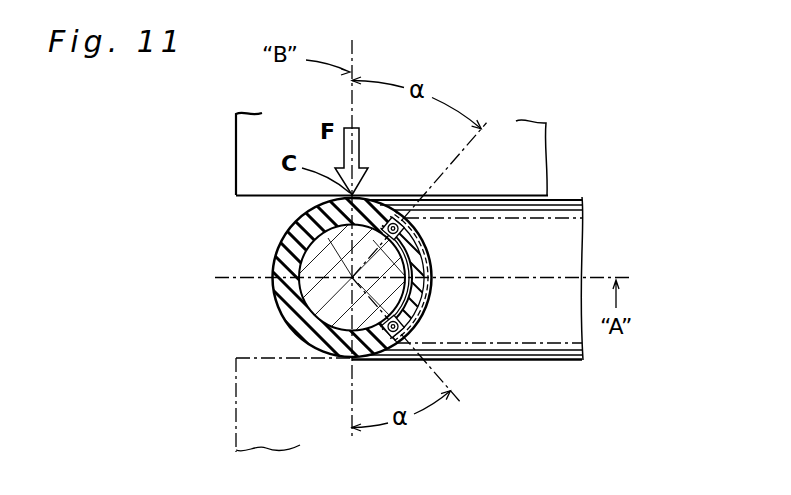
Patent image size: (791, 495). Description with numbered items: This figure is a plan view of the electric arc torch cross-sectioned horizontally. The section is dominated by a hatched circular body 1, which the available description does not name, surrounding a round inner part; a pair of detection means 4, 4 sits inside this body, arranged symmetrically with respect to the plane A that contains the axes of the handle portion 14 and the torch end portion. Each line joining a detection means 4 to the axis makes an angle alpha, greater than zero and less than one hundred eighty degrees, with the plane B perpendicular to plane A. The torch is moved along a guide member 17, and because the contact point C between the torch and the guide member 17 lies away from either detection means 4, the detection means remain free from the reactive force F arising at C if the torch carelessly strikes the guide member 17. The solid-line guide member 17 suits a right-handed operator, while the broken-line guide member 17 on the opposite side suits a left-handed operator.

The bearing ring (outer race) with ball 1 is at (279, 291).
The detection means 4 is at (398, 217).
The handle portion 14 is at (586, 229).
The guide member 17 is at (237, 170).